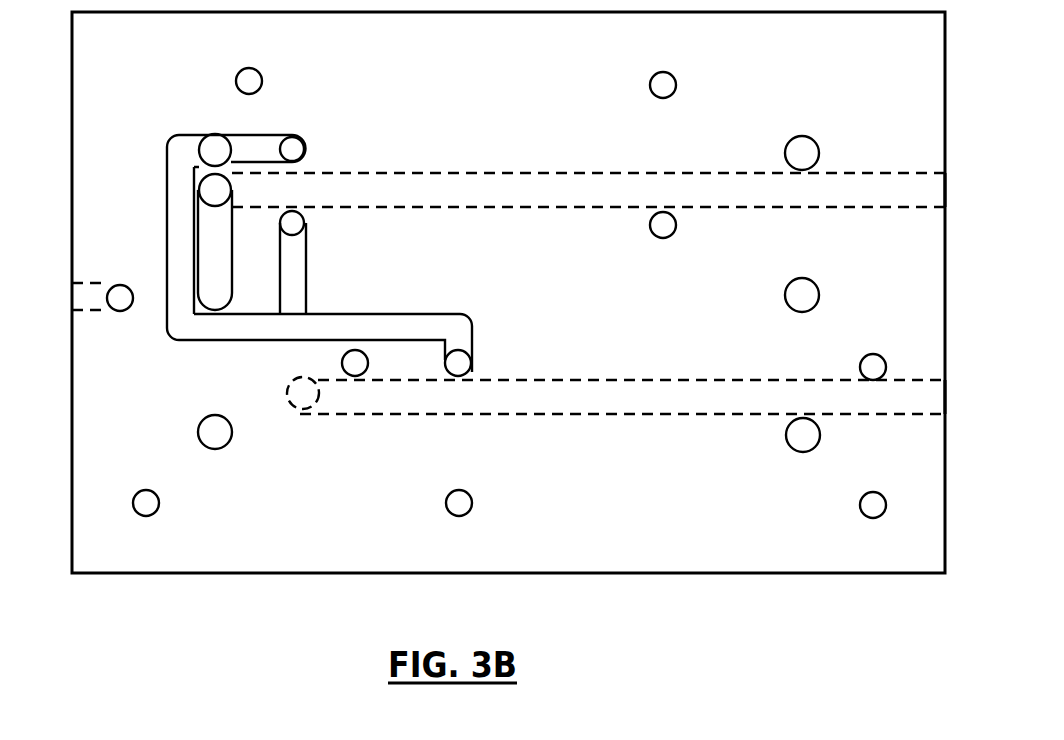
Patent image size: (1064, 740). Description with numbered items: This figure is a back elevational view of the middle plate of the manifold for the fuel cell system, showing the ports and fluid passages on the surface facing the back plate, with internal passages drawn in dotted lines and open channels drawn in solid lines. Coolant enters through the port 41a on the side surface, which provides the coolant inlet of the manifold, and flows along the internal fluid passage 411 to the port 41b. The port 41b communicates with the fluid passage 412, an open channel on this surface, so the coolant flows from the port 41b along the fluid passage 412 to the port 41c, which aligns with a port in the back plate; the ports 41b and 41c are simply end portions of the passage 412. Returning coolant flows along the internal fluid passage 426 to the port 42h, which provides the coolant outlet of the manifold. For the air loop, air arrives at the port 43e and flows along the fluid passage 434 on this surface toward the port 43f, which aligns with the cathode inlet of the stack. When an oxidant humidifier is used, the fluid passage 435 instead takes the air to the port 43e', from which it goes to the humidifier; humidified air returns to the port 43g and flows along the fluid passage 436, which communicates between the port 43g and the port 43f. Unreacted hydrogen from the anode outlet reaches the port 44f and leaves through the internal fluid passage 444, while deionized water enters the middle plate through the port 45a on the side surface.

The fluid passage 436 is at (256, 146).
The port 43f is at (199, 150).
The port 43g is at (328, 143).
The port 41b is at (207, 191).
The fluid passage 412 is at (213, 244).
The port 41c is at (214, 292).
The port 43e' is at (343, 227).
The fluid passage 435 is at (302, 280).
The fluid passage 434 is at (298, 327).
The port 43e is at (496, 349).
The fluid passage 411 is at (541, 180).
The port 41a is at (945, 192).
The fluid passage 426 is at (612, 398).
The port 42h is at (945, 400).
The port 45a is at (297, 404).
The fluid passage 444 is at (88, 296).
The port 44f is at (125, 311).